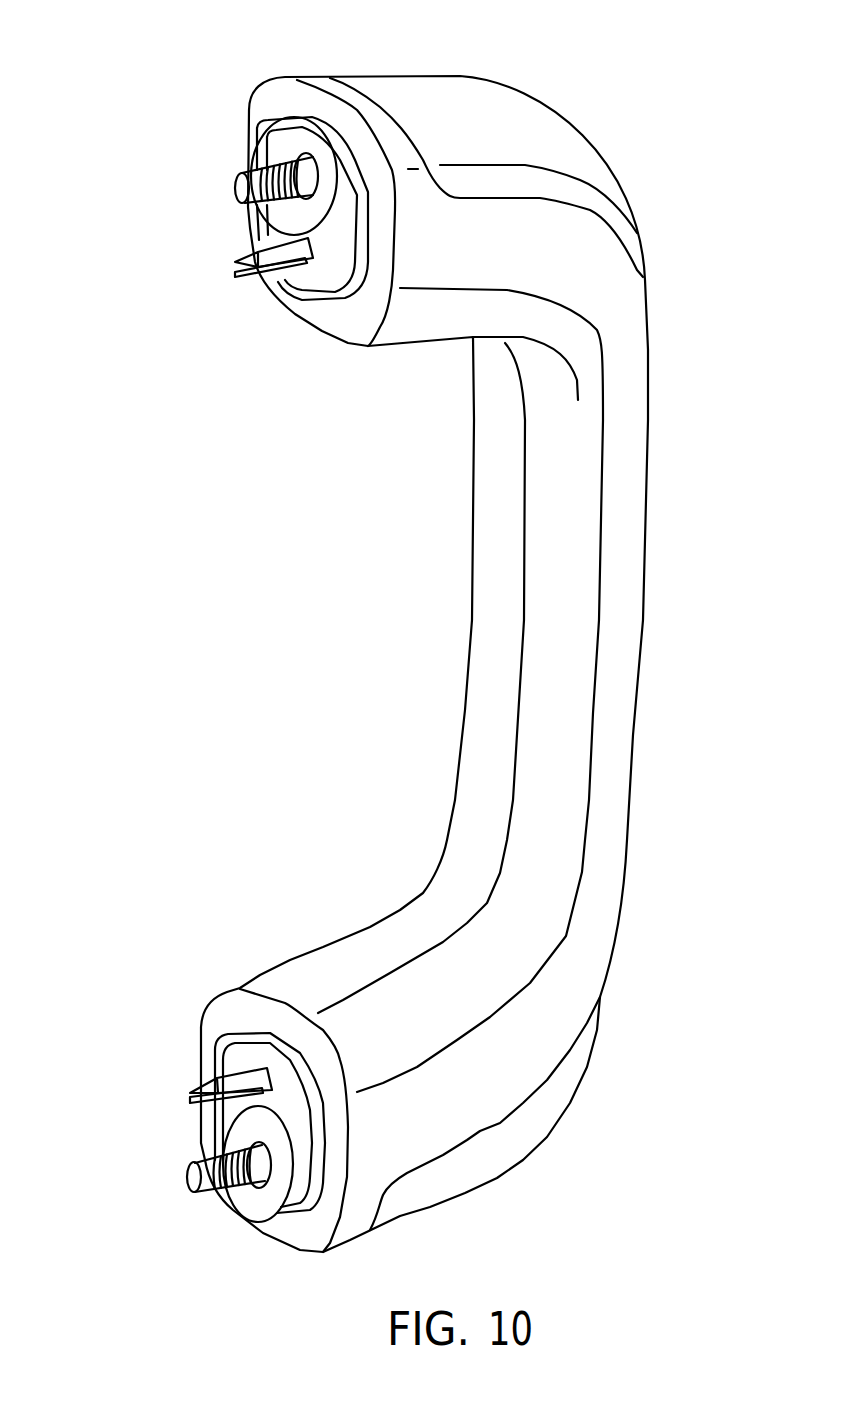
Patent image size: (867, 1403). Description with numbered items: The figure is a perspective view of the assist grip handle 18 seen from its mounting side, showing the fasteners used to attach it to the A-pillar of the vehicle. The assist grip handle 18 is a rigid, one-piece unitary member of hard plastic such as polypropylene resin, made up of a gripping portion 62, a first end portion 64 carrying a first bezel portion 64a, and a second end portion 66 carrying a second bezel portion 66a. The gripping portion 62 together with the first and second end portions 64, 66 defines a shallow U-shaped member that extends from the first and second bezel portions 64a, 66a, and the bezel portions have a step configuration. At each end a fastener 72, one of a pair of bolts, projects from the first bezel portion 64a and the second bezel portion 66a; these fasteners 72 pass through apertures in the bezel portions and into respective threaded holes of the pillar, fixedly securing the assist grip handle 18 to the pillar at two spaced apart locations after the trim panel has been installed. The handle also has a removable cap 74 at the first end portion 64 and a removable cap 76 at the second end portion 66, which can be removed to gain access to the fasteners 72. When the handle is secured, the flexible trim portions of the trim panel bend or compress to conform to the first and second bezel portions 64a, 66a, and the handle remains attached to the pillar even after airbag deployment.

The assist grip handle 18 is at (637, 730).
The gripping portion 62 is at (623, 575).
The first end portion 64 is at (447, 258).
The first bezel portion 64a is at (277, 101).
The second end portion 66 is at (382, 1017).
The second bezel portion 66a is at (210, 1024).
The fasteners 72 is at (250, 170).
The removable cap 74 is at (485, 110).
The removable cap 76 is at (522, 1118).